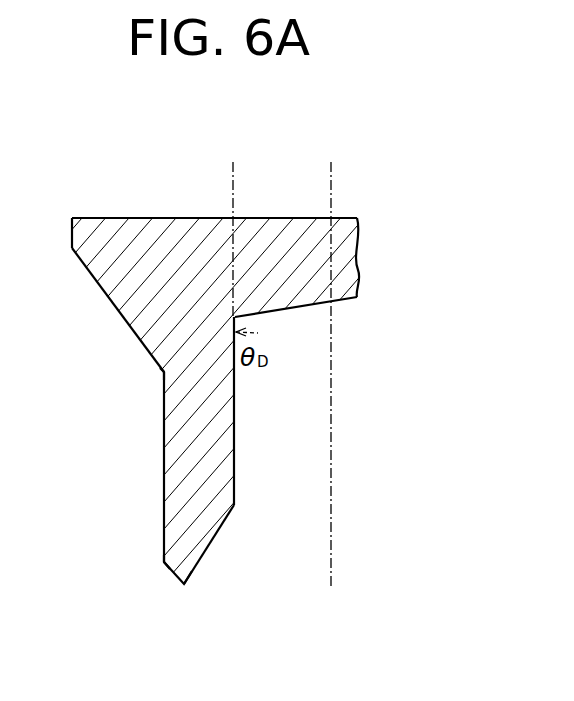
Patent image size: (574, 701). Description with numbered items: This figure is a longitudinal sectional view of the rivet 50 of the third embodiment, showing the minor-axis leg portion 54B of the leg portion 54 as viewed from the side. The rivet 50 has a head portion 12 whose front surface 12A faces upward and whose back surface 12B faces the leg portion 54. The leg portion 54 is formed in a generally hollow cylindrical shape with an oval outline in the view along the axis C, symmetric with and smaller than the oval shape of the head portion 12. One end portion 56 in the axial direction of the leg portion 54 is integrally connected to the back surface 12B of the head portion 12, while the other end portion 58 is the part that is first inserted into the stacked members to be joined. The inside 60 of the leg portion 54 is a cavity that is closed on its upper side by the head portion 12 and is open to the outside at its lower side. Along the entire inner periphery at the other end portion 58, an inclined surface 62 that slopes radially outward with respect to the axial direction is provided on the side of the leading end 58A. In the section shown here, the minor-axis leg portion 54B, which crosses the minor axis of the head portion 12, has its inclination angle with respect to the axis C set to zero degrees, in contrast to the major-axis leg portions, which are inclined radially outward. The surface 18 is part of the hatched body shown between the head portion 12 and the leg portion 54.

The head portion 12 is at (113, 216).
The front surface 12A is at (188, 216).
The back surface 12B is at (292, 310).
The inclined side surface 18 is at (112, 300).
The rivet 50 is at (298, 160).
The leg portion 54 is at (163, 474).
The minor-axis leg portion 54B is at (163, 446).
The one end portion 56 is at (160, 387).
The other end portion 58 is at (163, 562).
The leading end 58A is at (183, 584).
The inside 60 is at (298, 506).
The inclined surface 62 is at (210, 543).
The axis C is at (332, 447).